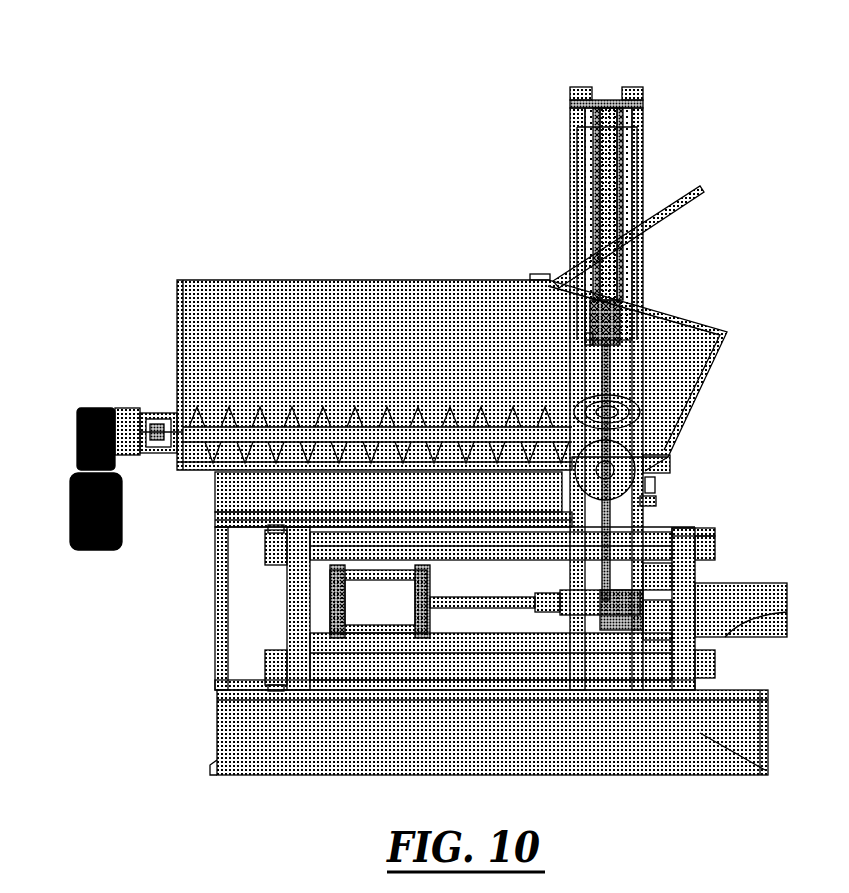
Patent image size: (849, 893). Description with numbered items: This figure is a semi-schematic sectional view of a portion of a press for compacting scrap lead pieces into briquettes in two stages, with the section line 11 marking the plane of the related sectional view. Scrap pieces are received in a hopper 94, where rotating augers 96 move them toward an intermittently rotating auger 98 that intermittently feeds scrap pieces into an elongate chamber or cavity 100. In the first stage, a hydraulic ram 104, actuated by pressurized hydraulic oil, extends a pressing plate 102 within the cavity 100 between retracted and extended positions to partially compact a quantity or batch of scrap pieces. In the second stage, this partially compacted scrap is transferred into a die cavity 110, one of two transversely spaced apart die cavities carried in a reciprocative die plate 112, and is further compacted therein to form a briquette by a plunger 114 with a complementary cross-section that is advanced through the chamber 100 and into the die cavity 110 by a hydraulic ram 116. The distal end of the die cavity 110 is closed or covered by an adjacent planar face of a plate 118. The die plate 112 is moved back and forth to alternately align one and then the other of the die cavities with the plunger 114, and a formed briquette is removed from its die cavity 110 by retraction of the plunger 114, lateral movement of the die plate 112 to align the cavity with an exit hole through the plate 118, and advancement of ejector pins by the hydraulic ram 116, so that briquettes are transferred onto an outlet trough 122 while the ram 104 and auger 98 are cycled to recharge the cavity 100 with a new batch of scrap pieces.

The section line 11- 11 is at (596, 30).
The hopper 94 is at (245, 277).
The rotating augers 96 is at (220, 405).
The intermittently rotating auger 98 is at (650, 460).
The elongate chamber or cavity 100 is at (648, 502).
The pressing plate 102 is at (565, 565).
The hydraulic ram 104 is at (640, 250).
The die cavity 110 is at (658, 612).
The reciprocative die plate 112 is at (667, 580).
The plunger 114 is at (600, 612).
The hydraulic ram 116 is at (310, 612).
The plate 118 is at (668, 680).
The outlet trough 122 is at (765, 585).